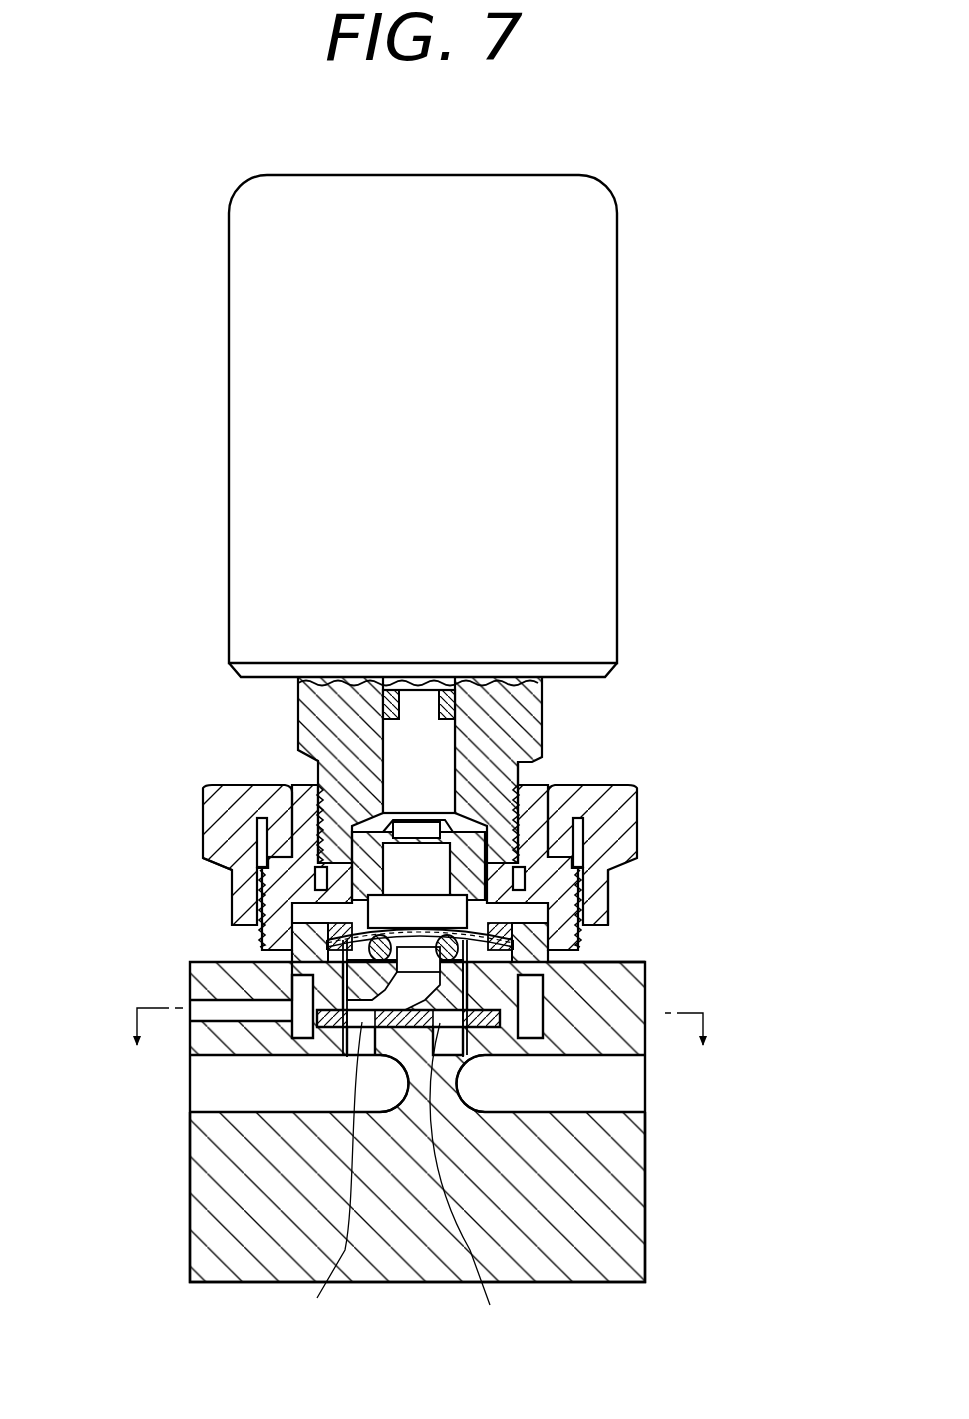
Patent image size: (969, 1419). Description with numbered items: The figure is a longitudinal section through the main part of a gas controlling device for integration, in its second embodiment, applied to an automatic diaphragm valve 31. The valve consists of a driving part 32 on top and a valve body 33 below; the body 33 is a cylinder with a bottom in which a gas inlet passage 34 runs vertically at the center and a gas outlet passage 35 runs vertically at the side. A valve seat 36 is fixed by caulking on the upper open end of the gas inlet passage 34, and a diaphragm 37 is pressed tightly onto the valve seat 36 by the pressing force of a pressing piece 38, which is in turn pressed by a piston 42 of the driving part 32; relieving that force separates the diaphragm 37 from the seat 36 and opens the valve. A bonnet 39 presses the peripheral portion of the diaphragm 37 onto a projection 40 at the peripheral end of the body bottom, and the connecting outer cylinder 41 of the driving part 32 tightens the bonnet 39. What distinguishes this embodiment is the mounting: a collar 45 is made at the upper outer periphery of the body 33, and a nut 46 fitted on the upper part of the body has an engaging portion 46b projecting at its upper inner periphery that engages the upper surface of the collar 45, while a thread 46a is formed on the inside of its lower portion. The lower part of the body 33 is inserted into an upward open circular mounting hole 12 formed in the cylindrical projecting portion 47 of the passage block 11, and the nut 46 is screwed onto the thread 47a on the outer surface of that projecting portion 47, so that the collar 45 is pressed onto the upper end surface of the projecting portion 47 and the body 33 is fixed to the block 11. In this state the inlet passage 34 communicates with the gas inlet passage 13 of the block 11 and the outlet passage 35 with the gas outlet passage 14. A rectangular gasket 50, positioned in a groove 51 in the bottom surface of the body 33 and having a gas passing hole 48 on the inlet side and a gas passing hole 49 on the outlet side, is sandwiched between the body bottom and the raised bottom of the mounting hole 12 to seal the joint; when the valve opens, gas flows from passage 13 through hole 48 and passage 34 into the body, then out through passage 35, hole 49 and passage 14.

The passage block 11 is at (650, 991).
The mounting hole 12 is at (605, 886).
The gas inlet passage 13 is at (255, 1102).
The gas outlet passage 14 is at (607, 1105).
The automatic diaphragm valve 31 is at (660, 345).
The driving part 32 is at (225, 426).
The valve body 33 is at (540, 781).
The gas inlet passage 34 is at (192, 982).
The gas outlet passage 35 is at (587, 962).
The valve seat 36 is at (535, 930).
The diaphragm 37 is at (480, 858).
The pressing piece 38 is at (437, 868).
The bonnet 39 is at (323, 907).
The projection 40 is at (333, 943).
The connecting outer cylinder 41 is at (310, 738).
The piston 42 is at (398, 738).
The collar 45 is at (292, 818).
The nut 46 is at (215, 802).
The thread 46a is at (608, 873).
The engaging portion 46b is at (577, 786).
The cylindrical projecting portion 47 is at (583, 832).
The thread 47a is at (350, 878).
The gas passing hole 48 is at (334, 1181).
The gas passing hole 49 is at (513, 1060).
The gasket 50 is at (317, 1057).
The groove 51 is at (481, 1181).